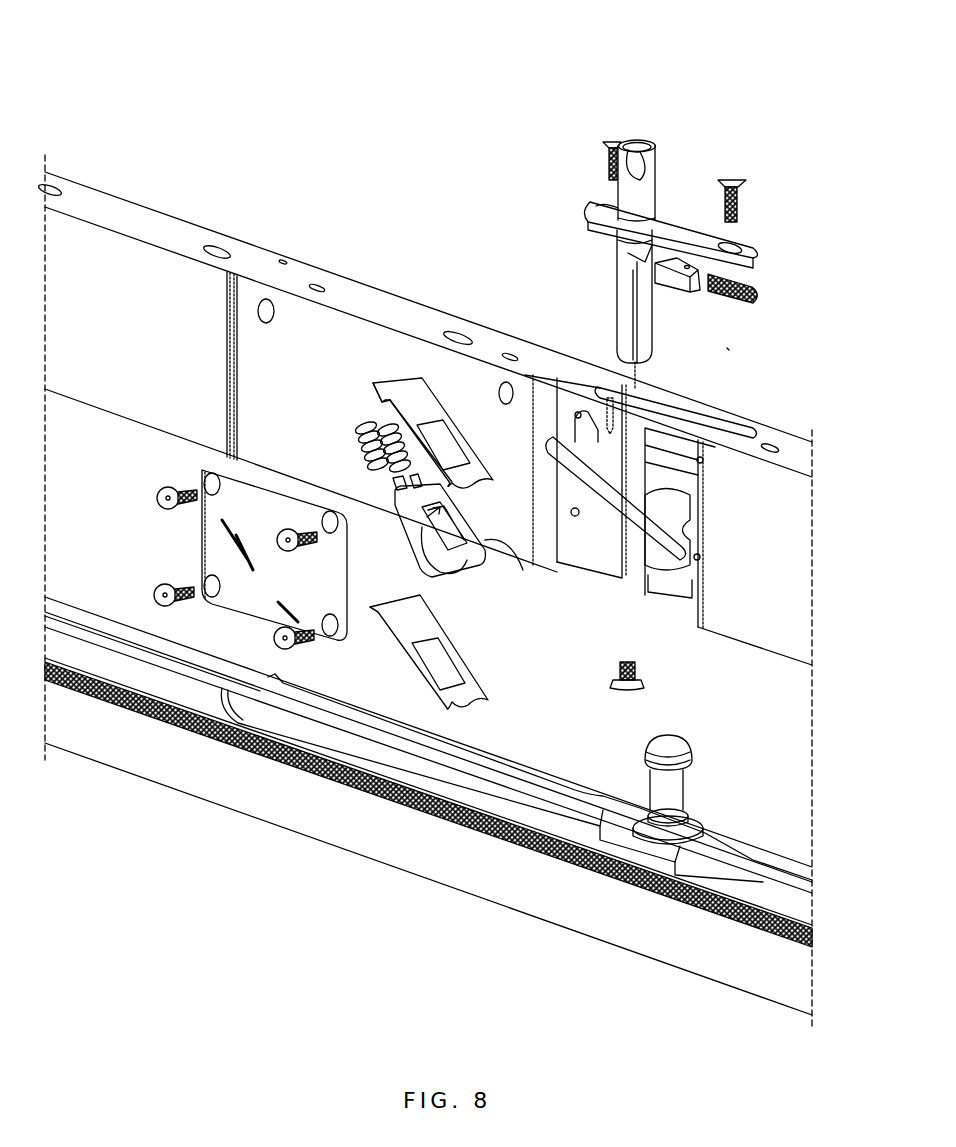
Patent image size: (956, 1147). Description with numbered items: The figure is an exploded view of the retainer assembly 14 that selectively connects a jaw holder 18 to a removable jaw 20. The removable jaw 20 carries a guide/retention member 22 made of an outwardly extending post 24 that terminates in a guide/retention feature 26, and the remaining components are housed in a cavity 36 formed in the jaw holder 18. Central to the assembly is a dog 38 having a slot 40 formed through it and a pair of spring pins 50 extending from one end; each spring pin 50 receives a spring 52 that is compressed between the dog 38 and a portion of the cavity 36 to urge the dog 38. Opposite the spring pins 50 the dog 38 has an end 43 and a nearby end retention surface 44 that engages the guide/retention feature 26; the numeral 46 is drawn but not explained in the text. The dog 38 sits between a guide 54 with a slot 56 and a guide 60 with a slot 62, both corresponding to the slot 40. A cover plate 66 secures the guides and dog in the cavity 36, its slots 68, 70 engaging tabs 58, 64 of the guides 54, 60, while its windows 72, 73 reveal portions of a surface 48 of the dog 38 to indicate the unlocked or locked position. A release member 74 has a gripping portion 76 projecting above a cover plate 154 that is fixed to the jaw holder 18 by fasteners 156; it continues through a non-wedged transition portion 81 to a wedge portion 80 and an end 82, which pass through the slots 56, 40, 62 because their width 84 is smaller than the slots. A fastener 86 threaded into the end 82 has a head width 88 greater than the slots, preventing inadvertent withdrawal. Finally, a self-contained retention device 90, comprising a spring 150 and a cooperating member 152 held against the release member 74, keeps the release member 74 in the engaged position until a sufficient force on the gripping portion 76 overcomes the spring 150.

The retainer assembly 14 is at (681, 56).
The jaw holder 18 is at (767, 430).
The removable jaw 20 is at (737, 842).
The guide/retention member 22 is at (687, 775).
The post 24 is at (685, 788).
The guide/retention feature 26 is at (668, 737).
The cavity 36 is at (633, 432).
The dog 38 is at (470, 518).
The slot 40 is at (470, 537).
The end 43 is at (460, 570).
The end retention surface 44 is at (505, 577).
The opening 46 is at (427, 553).
The surface 48 is at (397, 537).
The spring pins 50 is at (393, 490).
The spring 52 is at (377, 423).
The guide 54 is at (415, 380).
The slot 56 is at (440, 420).
The tab 58 is at (380, 397).
The guide 60 is at (423, 663).
The slot 62 is at (473, 703).
The tab 64 is at (378, 612).
The cover plate 66 is at (238, 620).
The slot 68 is at (223, 475).
The slot 70 is at (222, 525).
The window 72 is at (260, 567).
The window 73 is at (293, 607).
The release member 74 is at (658, 195).
The gripping portion 76 is at (652, 146).
The wedge portion 80 is at (617, 298).
The non-wedged transition portion 81 is at (617, 245).
The end 82 is at (615, 347).
The width 84 is at (607, 377).
The fastener 86 is at (640, 668).
The width 88 is at (632, 706).
The retention device 90 is at (736, 349).
The spring 150 is at (735, 308).
The cooperating member 152 is at (670, 287).
The cover plate 154 is at (683, 218).
The fasteners 156 is at (738, 184).